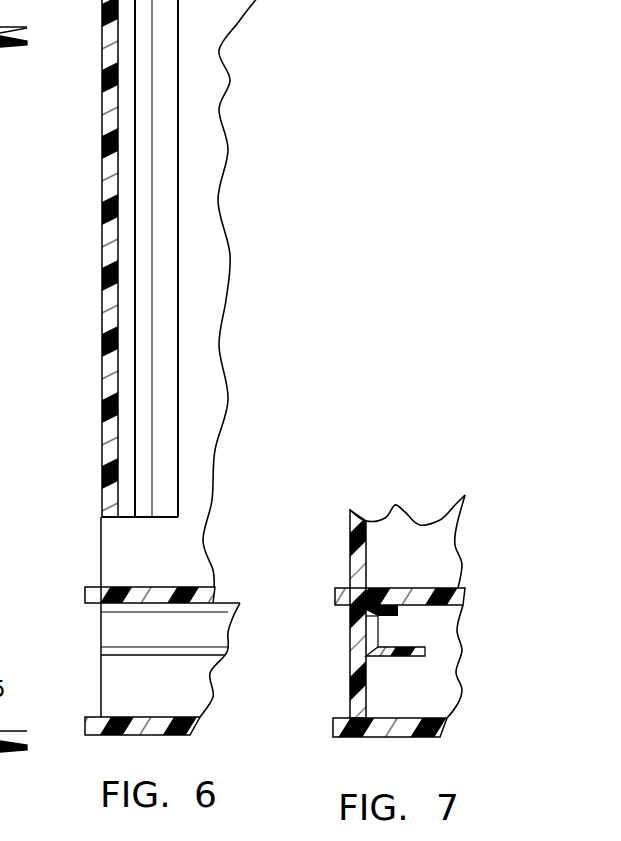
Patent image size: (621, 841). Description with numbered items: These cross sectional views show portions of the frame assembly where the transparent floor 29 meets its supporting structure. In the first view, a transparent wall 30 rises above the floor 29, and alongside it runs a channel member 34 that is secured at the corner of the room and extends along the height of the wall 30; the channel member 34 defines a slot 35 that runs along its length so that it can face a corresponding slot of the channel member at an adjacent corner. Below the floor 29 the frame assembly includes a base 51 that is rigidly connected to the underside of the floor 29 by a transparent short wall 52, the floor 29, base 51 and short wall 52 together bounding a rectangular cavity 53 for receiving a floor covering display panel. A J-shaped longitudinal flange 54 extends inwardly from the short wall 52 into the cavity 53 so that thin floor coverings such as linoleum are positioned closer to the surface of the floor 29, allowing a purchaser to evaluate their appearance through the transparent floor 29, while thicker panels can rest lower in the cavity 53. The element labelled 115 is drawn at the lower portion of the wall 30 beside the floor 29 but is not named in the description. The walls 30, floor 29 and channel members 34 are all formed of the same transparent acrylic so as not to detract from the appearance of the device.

In FIG. 6, the floor 29 is at (185, 588).
In FIG. 7, the floor 29 is at (448, 590).
In FIG. 6, the wall 30 is at (100, 262).
In FIG. 6, the channel member 34 is at (180, 185).
In FIG. 6, the slot 35 is at (143, 115).
In FIG. 7, the base 51 is at (417, 714).
In FIG. 7, the short wall 52 is at (352, 703).
In FIG. 6, the cavity 53 is at (130, 694).
In FIG. 7, the cavity 53 is at (416, 684).
In FIG. 6, the J-shaped longitudinal flange 54 is at (230, 625).
In FIG. 7, the J-shaped longitudinal flange 54 is at (425, 655).
In FIG. 6, the wall extension 115 is at (115, 570).